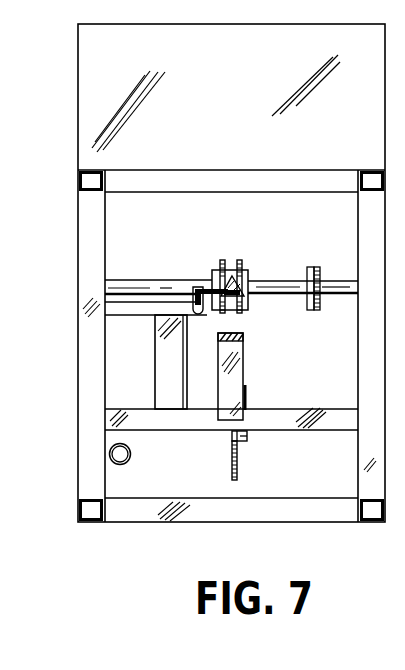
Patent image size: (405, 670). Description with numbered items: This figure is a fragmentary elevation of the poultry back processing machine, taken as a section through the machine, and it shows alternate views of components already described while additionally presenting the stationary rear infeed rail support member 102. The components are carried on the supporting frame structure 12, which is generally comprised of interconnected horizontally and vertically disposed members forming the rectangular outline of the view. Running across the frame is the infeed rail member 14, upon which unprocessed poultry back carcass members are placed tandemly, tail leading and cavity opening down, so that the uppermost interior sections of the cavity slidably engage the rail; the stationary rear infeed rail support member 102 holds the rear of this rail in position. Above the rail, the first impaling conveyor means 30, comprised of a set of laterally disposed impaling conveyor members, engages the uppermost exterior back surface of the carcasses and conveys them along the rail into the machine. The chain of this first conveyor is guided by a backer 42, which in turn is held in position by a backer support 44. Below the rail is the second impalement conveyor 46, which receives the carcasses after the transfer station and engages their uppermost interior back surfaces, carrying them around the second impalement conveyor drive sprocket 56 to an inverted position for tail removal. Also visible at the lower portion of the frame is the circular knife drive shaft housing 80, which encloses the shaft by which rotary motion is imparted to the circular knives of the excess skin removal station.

The supporting frame structure 12 is at (72, 477).
The infeed rail member 14 is at (244, 337).
The first impaling conveyor means 30 is at (240, 266).
The backer 42 is at (246, 293).
The backer support 44 is at (200, 284).
The second impalement conveyor 46 is at (238, 480).
The second impalement conveyor drive sprocket 56 is at (238, 457).
The circular knife drive shaft housing 80 is at (131, 454).
The stationary rear infeed rail support member 102 is at (244, 360).